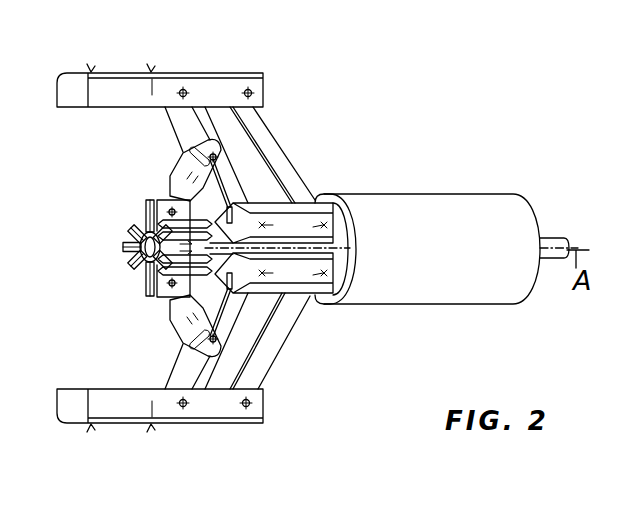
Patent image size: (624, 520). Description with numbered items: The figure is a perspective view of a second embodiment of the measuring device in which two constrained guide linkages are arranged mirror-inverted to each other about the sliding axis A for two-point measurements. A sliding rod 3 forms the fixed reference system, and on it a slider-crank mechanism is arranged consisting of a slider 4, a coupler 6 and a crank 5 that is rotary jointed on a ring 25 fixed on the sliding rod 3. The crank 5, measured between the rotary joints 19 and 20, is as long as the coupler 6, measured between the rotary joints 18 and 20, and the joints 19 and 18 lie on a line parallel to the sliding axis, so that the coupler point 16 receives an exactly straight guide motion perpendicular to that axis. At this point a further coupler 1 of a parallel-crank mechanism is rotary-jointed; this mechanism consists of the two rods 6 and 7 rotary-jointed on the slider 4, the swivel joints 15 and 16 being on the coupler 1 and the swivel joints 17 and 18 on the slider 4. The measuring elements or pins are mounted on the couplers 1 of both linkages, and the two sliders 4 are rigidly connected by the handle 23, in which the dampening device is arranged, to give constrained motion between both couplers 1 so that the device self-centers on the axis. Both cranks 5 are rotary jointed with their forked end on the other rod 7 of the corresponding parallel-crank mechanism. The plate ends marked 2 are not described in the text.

The coupler 1 is at (122, 103).
The plate end portion 2 is at (151, 71).
The sliding rod 3 is at (553, 238).
The slider 4 is at (273, 204).
The crank 5 is at (183, 167).
The coupler 6 is at (283, 150).
The rod 7 is at (226, 172).
The swivel joint 15 is at (184, 89).
The coupler point 16 is at (248, 89).
The swivel joint 17 is at (275, 249).
The rotary joint 18 is at (312, 254).
The rotary joint 19 is at (170, 208).
The rotary joint 20 is at (214, 154).
The handle 23 is at (387, 194).
The ring 25 is at (124, 248).